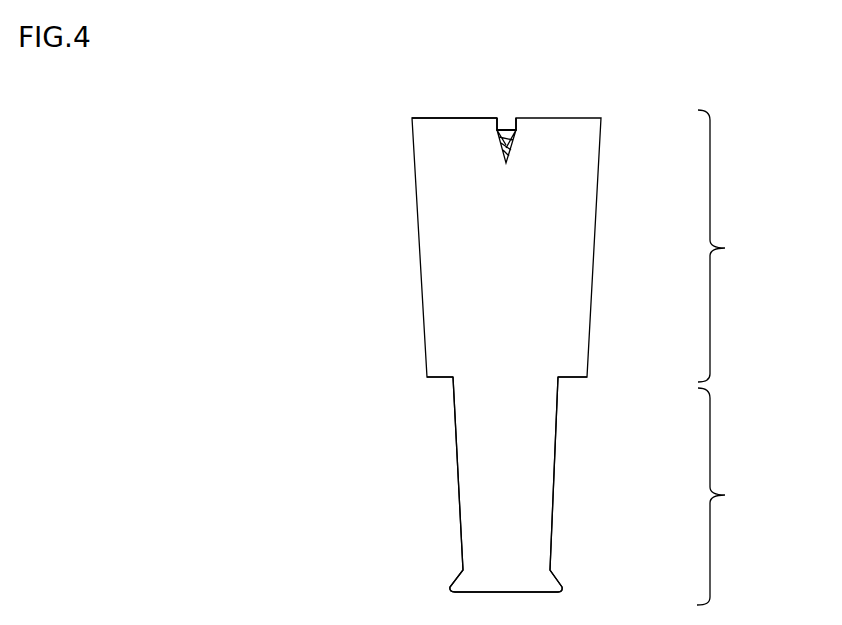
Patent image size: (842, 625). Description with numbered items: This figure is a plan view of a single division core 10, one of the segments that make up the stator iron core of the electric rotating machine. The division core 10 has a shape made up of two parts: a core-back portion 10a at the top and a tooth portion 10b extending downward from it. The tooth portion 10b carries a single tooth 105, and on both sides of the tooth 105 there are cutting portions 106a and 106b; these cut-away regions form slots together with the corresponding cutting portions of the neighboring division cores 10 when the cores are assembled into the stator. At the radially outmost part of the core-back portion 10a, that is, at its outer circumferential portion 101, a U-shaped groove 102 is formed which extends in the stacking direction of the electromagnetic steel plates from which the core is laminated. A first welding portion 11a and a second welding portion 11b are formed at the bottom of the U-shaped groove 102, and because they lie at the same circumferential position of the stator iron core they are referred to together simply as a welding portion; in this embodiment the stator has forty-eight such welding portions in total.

The division core 10 is at (587, 163).
The core-back portion 10a is at (745, 246).
The tooth portion 10b is at (745, 496).
The outer circumferential portion 101 is at (437, 118).
The U-shaped groove 102 is at (497, 118).
The first welding portion 11a is at (506, 118).
The second welding portion 11b is at (506, 124).
The tooth 105 is at (485, 508).
The cutting portion 106a is at (443, 382).
The cutting portion 106b is at (567, 377).